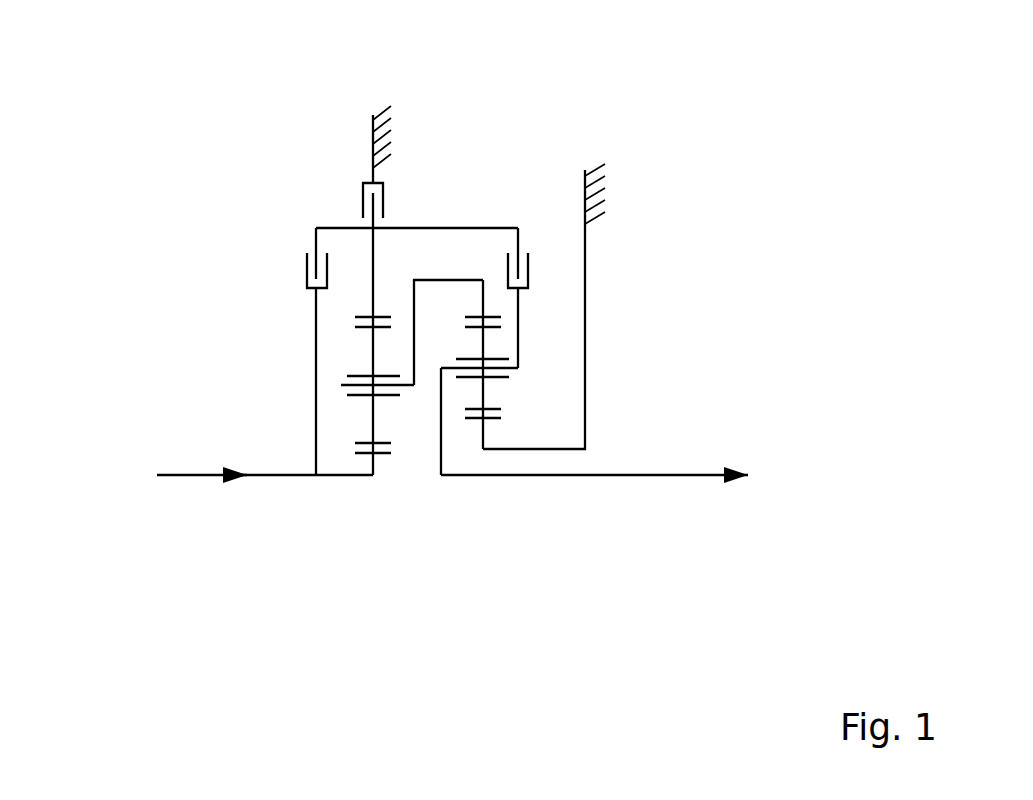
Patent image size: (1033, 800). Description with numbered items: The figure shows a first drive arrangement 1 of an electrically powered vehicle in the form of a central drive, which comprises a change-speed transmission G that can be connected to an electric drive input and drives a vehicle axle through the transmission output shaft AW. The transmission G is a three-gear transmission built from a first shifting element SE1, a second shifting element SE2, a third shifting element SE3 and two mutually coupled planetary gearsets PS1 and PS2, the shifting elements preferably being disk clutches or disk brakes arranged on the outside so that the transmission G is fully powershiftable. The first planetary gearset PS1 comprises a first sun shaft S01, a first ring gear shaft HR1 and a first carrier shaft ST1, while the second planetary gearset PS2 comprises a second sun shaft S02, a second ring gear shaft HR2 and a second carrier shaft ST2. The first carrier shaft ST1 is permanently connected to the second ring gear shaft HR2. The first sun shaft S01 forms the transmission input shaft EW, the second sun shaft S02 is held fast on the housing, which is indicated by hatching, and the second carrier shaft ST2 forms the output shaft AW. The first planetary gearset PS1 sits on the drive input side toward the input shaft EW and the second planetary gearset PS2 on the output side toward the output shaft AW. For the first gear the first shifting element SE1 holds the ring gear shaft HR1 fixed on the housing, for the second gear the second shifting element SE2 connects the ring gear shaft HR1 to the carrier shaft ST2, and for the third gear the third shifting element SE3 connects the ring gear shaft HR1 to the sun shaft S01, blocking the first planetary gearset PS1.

The transmission G is at (237, 107).
The drive arrangement 1 is at (560, 137).
The transmission input shaft EW is at (198, 478).
The transmission output shaft AW is at (698, 478).
The first shifting element SE1 is at (358, 200).
The second shifting element SE2 is at (532, 270).
The third shifting element SE3 is at (302, 270).
The first planetary gearset PS1 is at (373, 506).
The second planetary gearset PS2 is at (483, 504).
The first ring gear shaft HR1 is at (373, 255).
The second ring gear shaft HR2 is at (465, 280).
The first carrier shaft ST1 is at (407, 388).
The second carrier shaft ST2 is at (627, 478).
The first sun shaft S01 is at (342, 478).
The second sun shaft S02 is at (556, 452).